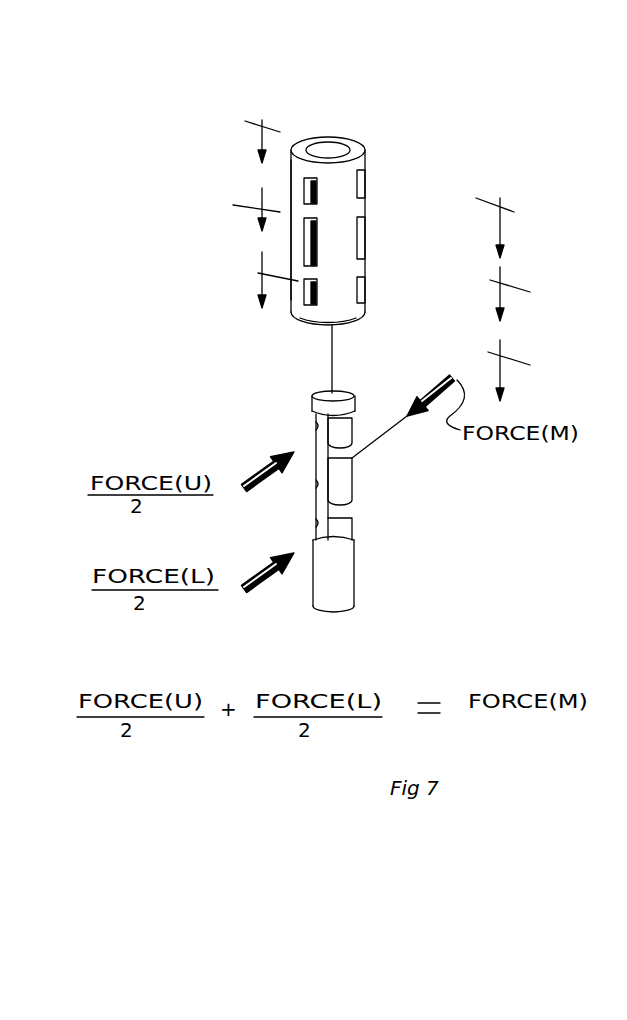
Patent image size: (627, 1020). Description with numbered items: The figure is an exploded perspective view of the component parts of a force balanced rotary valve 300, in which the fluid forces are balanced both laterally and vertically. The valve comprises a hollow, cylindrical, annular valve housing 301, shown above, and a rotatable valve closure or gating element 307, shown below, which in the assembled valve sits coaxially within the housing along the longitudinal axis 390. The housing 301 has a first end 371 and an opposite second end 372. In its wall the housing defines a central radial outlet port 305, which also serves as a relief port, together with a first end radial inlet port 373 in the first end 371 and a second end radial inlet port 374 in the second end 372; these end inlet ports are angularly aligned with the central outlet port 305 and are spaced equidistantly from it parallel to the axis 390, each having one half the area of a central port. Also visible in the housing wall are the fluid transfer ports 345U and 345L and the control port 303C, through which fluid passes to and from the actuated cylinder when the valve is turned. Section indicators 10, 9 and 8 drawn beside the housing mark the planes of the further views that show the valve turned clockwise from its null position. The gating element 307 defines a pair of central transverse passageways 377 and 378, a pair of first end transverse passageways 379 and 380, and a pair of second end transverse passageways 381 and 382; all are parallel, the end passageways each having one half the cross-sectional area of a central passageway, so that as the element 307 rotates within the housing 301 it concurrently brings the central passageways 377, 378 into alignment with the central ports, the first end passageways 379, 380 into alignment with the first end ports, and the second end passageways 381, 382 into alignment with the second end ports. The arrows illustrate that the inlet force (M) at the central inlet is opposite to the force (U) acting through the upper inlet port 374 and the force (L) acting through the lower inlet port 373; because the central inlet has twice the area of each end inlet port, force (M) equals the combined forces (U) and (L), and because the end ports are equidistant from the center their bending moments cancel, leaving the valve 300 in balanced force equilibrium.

The force balanced rotary valve 300 is at (412, 150).
The valve housing 301 is at (267, 103).
The second end 372 is at (353, 143).
The second end radial inlet port 374 is at (304, 202).
The central radial outlet port 305 is at (298, 248).
The first end radial inlet port 373 is at (303, 303).
The first fluid transfer port 345U is at (368, 197).
The control port 303C is at (362, 245).
The first fluid transfer port 345L is at (367, 300).
The first end 371 is at (332, 313).
The dimension 10 is at (382, 189).
The dimension 9 is at (381, 253).
The dimension 8 is at (381, 316).
The longitudinal axis 390 is at (328, 382).
The valve closure element 307 is at (345, 590).
The central passageway 377 is at (340, 480).
The first end transverse passageway 379 is at (340, 523).
The second end transverse passageway 382 is at (316, 425).
The central passageway 378 is at (316, 482).
The first end transverse passageway 380 is at (316, 522).
The second end transverse passageway 381 is at (337, 425).